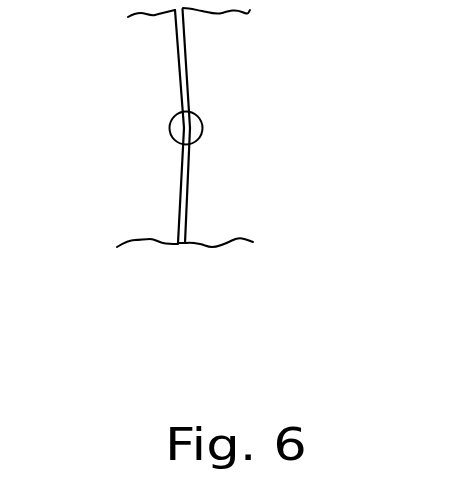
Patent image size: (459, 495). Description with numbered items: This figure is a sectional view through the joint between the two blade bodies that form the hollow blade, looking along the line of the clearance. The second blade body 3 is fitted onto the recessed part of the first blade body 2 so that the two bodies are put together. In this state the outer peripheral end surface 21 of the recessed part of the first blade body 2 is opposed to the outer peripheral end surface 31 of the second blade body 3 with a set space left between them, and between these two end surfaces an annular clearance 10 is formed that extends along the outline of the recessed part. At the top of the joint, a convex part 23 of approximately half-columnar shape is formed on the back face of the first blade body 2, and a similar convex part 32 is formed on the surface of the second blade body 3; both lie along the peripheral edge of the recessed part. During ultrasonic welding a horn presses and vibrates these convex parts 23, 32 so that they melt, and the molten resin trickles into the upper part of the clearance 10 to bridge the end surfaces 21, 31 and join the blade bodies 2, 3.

The annular clearance 10 is at (187, 75).
The convex part 23 is at (200, 129).
The convex part 32 is at (176, 131).
The outer peripheral end surface 31 is at (188, 165).
The outer peripheral end surface 21 is at (181, 192).
The second blade body 3 is at (163, 223).
The first blade body 2 is at (218, 222).